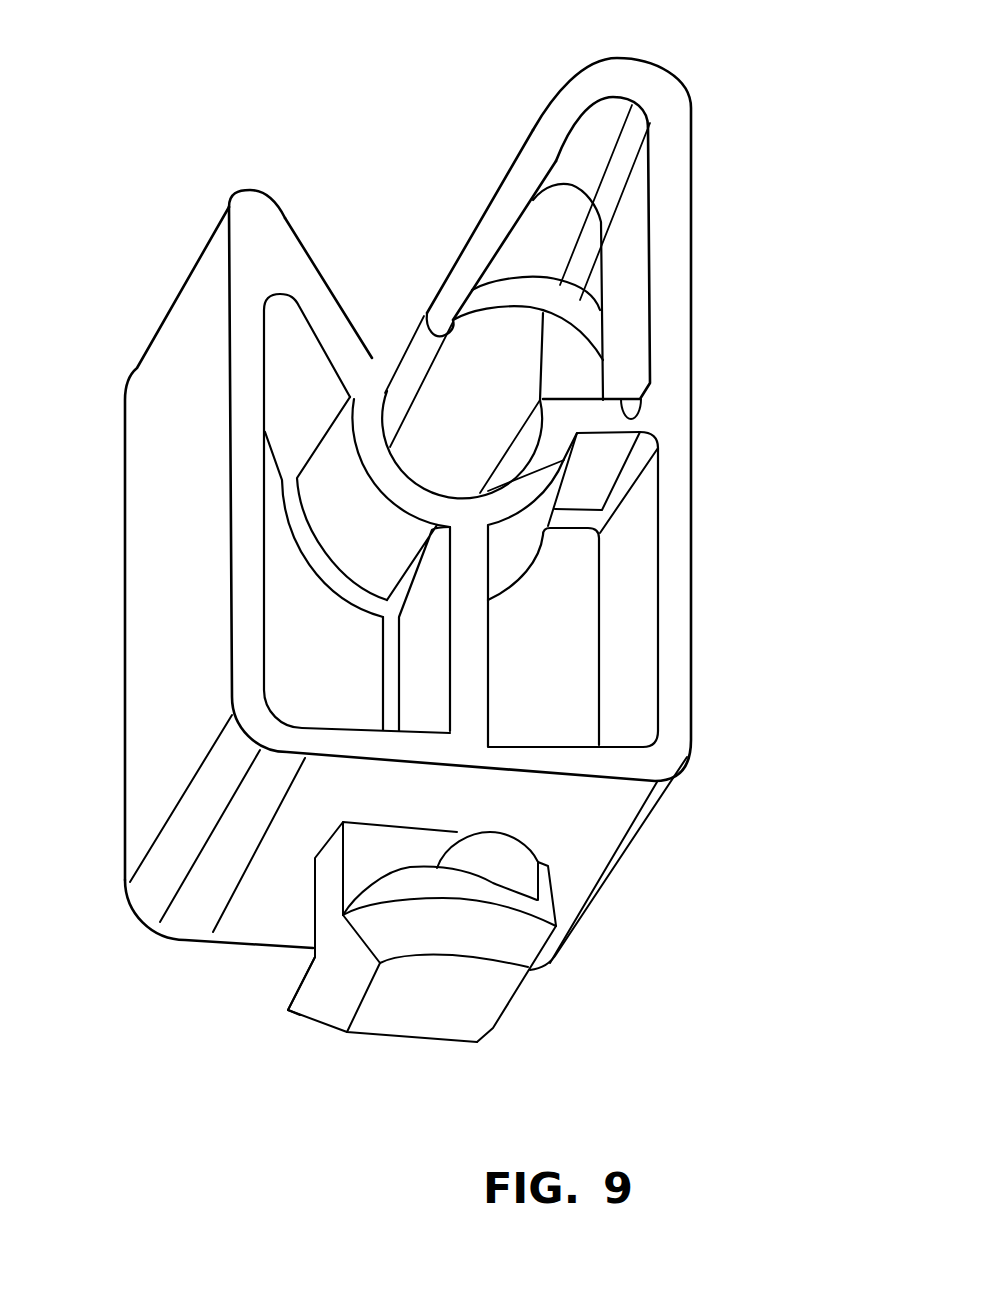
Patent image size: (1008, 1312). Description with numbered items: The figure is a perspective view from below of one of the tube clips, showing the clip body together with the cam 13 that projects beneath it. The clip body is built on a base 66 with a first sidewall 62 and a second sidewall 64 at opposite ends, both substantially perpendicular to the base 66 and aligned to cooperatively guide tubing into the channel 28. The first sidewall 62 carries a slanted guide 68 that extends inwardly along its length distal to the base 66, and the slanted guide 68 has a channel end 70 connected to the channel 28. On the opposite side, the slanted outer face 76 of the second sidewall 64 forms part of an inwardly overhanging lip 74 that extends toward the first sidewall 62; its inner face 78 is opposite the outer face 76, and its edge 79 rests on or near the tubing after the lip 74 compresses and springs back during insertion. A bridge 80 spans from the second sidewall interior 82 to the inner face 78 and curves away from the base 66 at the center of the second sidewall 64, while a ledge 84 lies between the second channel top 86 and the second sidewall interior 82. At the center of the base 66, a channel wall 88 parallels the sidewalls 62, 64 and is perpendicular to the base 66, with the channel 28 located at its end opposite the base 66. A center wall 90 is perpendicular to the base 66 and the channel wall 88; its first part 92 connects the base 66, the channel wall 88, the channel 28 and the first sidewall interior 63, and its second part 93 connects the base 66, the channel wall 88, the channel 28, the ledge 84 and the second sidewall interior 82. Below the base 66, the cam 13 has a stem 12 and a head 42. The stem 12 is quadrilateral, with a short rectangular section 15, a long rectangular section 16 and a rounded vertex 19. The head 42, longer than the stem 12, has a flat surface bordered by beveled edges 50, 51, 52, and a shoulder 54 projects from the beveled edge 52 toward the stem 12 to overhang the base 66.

The stem 12 is at (323, 907).
The cam 13 is at (380, 1027).
The short rectangular section of stem 15 is at (407, 843).
The long rectangular section of stem 16 is at (357, 848).
The rounded vertex 19 is at (540, 883).
The channel 28 is at (540, 398).
The head 42 is at (433, 1027).
The beveled edge 50 is at (505, 1008).
The beveled edge 51 is at (322, 1013).
The beveled edge 52 is at (465, 945).
The shoulder 54 is at (455, 841).
The first sidewall 62 is at (228, 420).
The first sidewall interior 63 is at (290, 355).
The second sidewall 64 is at (680, 284).
The base 66 is at (617, 804).
The slanted guide 68 is at (300, 243).
The channel end 70 is at (368, 356).
The overhanging lip 74 is at (503, 238).
The slanted outer face 76 is at (503, 178).
The inner face 78 is at (560, 158).
The edge 79 is at (416, 347).
The bridge 80 is at (537, 300).
The second sidewall interior 82 is at (638, 262).
The ledge 84 is at (658, 420).
The second channel top 86 is at (530, 392).
The channel wall 88 is at (467, 642).
The center wall 90 is at (563, 600).
The first part of center wall 92 is at (297, 653).
The second part of center wall 93 is at (568, 703).